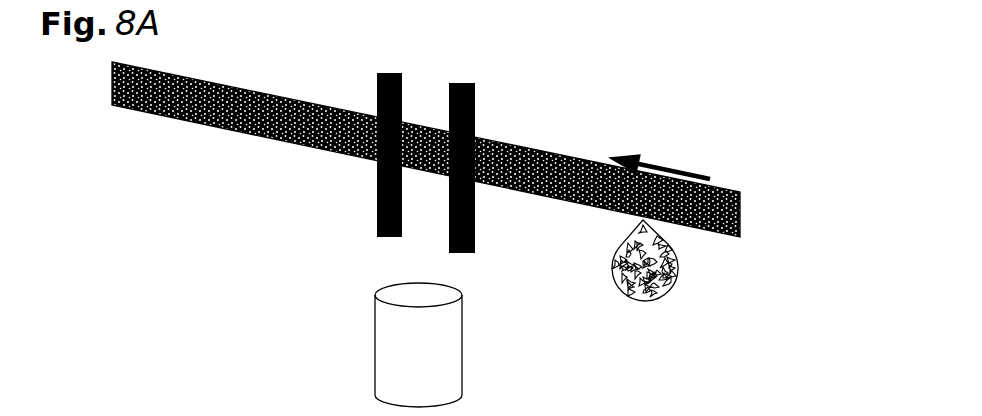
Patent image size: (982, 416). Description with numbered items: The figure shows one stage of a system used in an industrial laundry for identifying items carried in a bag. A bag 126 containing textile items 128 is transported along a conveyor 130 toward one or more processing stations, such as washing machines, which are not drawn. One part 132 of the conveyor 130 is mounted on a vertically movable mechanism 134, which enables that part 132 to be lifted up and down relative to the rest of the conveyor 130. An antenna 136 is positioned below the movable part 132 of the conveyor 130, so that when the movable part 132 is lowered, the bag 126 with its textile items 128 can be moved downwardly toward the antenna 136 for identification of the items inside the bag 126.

The bag 126 is at (668, 297).
The textile items 128 is at (630, 303).
The conveyor 130 is at (573, 163).
The part of the conveyor 132 is at (492, 140).
The vertically movable mechanism 134 is at (475, 238).
The antenna 136 is at (462, 377).